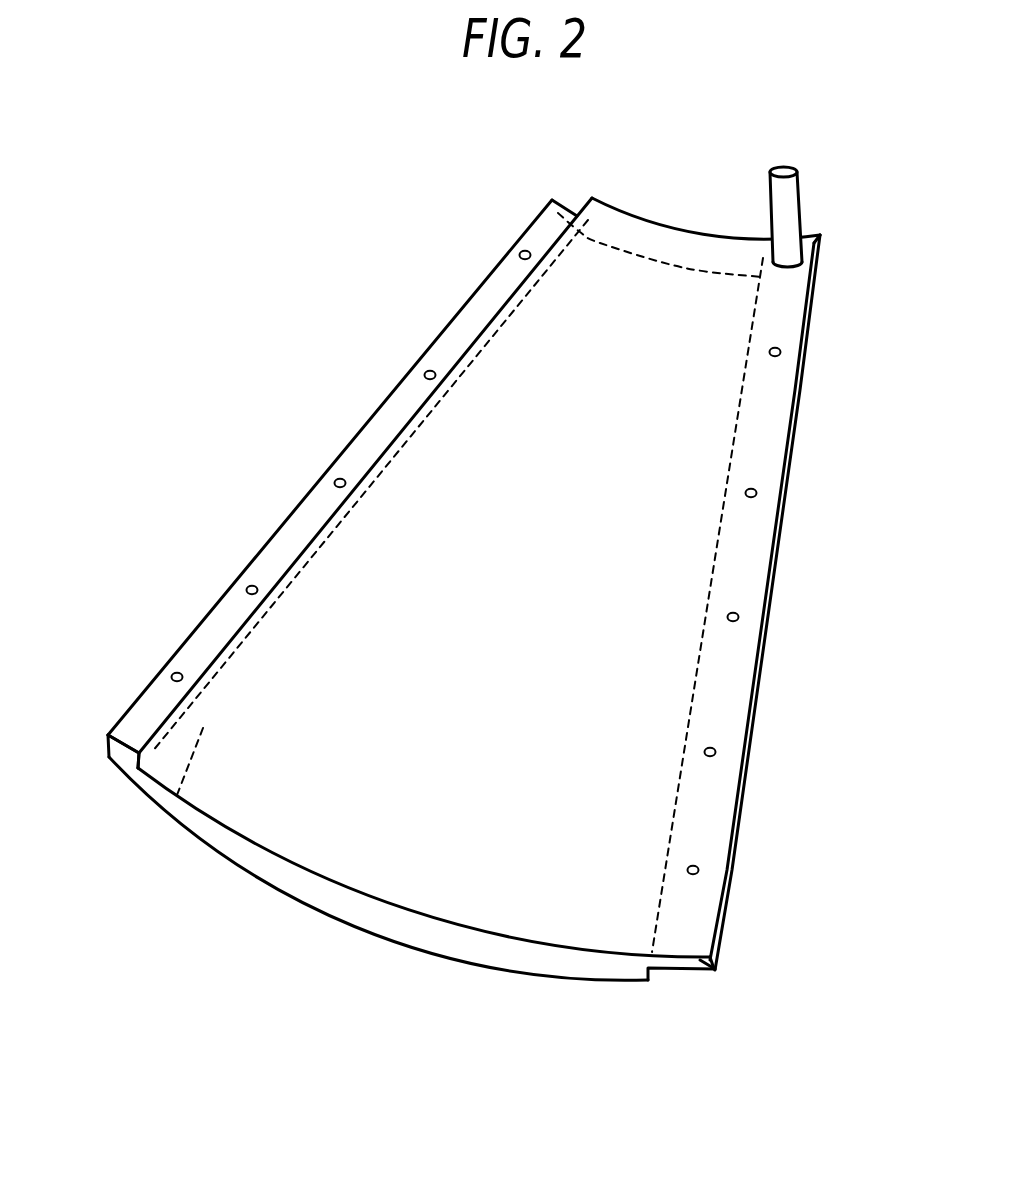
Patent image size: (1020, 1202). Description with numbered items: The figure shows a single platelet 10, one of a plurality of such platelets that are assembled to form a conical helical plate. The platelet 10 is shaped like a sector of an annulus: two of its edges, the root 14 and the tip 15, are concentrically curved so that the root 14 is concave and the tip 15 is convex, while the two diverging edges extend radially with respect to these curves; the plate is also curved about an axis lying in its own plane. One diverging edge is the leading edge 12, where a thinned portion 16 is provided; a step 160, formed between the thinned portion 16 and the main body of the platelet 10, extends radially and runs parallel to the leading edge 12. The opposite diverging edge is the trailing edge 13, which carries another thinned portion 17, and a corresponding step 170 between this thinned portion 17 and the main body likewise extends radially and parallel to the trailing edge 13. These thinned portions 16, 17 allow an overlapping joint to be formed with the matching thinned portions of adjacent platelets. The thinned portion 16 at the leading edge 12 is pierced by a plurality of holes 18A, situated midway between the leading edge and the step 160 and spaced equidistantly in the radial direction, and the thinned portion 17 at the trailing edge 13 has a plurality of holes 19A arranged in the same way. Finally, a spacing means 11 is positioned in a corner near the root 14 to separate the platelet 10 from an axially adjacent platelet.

The platelet 10 is at (600, 322).
The spacing means 11 is at (784, 168).
The leading edge 12 is at (770, 585).
The trailing edge 13 is at (355, 437).
The root 14 is at (610, 203).
The tip 15 is at (352, 908).
The thinned portion 16 is at (697, 973).
The step 160 is at (657, 975).
The thinned portion 17 is at (137, 725).
The step 170 is at (177, 795).
The holes 18A is at (777, 348).
The holes 19A is at (525, 251).